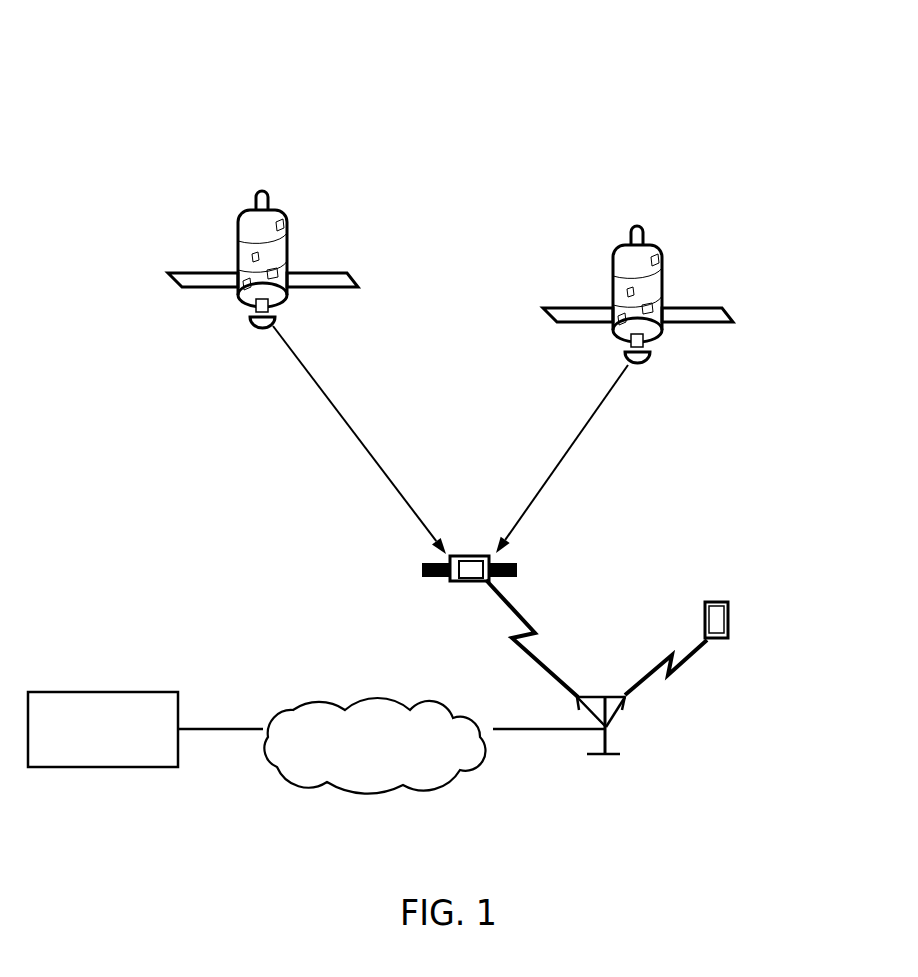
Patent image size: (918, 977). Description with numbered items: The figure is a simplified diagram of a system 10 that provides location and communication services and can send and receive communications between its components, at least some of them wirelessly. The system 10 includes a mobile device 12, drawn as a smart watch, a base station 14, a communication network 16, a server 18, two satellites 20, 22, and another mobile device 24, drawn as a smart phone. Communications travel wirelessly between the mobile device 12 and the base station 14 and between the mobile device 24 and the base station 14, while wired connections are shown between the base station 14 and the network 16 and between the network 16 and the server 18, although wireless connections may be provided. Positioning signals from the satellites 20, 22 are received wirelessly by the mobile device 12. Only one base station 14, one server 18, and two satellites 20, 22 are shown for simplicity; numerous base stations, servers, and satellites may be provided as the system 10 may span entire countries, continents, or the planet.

The system 10 is at (121, 64).
The mobile device 12 is at (421, 566).
The base station 14 is at (608, 742).
The communication network 16 is at (298, 707).
The server 18 is at (103, 692).
The satellite 20 is at (240, 243).
The satellite 22 is at (662, 281).
The mobile device 24 is at (718, 601).